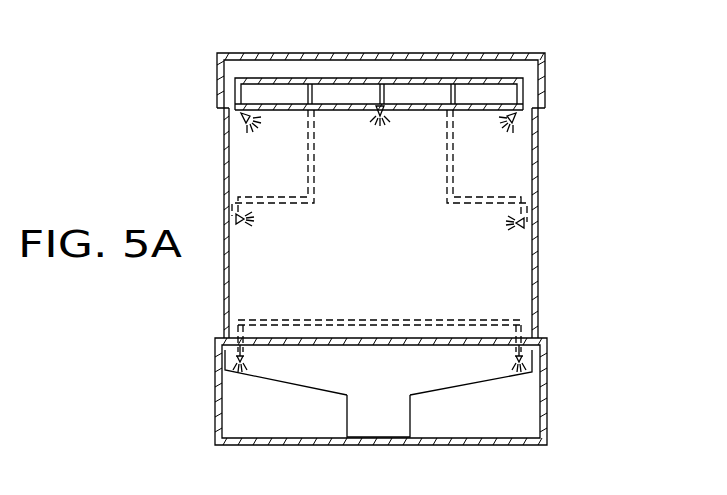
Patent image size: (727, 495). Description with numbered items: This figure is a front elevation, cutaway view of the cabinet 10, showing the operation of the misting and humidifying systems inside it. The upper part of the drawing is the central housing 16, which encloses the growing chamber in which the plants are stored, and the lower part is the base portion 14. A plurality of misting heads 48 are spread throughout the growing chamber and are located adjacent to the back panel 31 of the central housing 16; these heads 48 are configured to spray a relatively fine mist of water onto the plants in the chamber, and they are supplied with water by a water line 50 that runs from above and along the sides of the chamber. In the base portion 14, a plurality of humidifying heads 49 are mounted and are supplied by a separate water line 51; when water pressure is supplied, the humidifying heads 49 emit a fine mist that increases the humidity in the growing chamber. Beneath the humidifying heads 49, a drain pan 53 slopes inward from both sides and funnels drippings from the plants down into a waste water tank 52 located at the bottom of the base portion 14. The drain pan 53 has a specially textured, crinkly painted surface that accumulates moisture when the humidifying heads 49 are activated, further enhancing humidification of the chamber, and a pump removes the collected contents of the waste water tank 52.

The cabinet 10 is at (311, 24).
The base portion 14 is at (558, 386).
The central housing 16 is at (552, 256).
The back panel 31 is at (391, 268).
The misting heads 48 is at (243, 118).
The humidifying heads 49 is at (250, 360).
The water line 50 is at (360, 78).
The water line 51 is at (379, 321).
The waste water tank 52 is at (390, 418).
The drain pan 53 is at (317, 388).